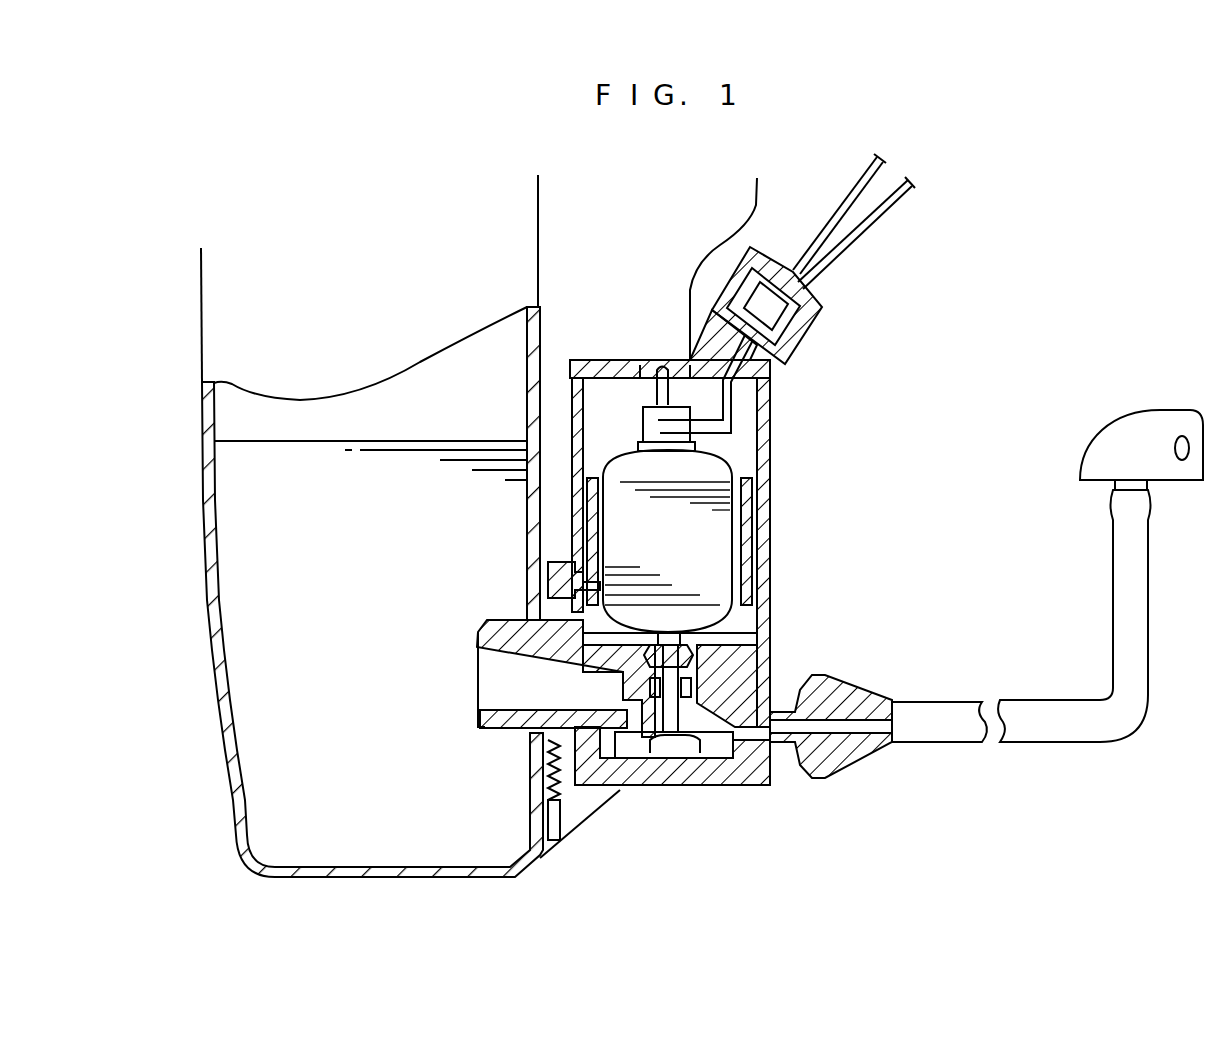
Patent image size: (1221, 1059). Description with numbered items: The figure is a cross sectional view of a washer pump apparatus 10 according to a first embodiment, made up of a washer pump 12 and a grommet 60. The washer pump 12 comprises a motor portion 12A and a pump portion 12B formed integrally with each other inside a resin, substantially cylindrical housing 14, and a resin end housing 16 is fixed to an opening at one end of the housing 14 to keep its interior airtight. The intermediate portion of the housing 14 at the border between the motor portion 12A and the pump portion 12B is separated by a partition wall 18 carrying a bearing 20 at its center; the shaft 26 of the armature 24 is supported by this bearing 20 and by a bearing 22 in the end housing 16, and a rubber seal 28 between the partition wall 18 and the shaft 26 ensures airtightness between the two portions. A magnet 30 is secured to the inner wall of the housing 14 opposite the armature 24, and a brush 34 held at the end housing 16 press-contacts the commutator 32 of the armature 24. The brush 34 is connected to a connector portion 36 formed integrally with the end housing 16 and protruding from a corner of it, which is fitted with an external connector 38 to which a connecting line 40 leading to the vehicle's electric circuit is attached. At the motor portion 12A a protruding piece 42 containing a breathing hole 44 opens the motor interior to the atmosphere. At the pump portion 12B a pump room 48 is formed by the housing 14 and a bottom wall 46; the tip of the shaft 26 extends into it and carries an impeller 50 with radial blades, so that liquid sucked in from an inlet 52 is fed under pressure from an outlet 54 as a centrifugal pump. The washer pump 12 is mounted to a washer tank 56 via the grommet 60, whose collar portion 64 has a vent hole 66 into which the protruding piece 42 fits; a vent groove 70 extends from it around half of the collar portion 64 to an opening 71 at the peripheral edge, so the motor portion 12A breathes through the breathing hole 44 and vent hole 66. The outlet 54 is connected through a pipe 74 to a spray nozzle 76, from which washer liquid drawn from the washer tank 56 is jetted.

The washer pump apparatus 10 is at (1003, 262).
The washer pump 12 is at (905, 467).
The motor portion 12A is at (790, 492).
The pump portion 12B is at (790, 605).
The housing 14 is at (770, 430).
The end housing 16 is at (628, 362).
The partition wall 18 is at (629, 763).
The bearing 20 is at (688, 638).
The bearing 22 is at (657, 372).
The armature 24 is at (718, 556).
The shaft 26 is at (664, 365).
The rubber seal 28 is at (654, 772).
The magnet 30 is at (748, 487).
The commutator 32 is at (643, 412).
The brush 34 is at (700, 412).
The connector portion 36 is at (762, 320).
The external connector 38 is at (822, 303).
The connecting line 40 is at (856, 226).
The protruding piece 42 is at (566, 566).
The breathing hole 44 is at (590, 585).
The bottom wall 46 is at (650, 756).
The pump room 48 is at (733, 780).
The impeller 50 is at (698, 768).
The inlet 52 is at (476, 672).
The outlet 54 is at (845, 765).
The washer tank 56 is at (448, 878).
The grommet 60 is at (512, 618).
The collar portion 64 is at (590, 800).
The vent hole 66 is at (548, 763).
The vent groove 70 is at (558, 800).
The opening 71 is at (551, 835).
The pipe 74 is at (935, 700).
The spray nozzle 76 is at (1120, 432).